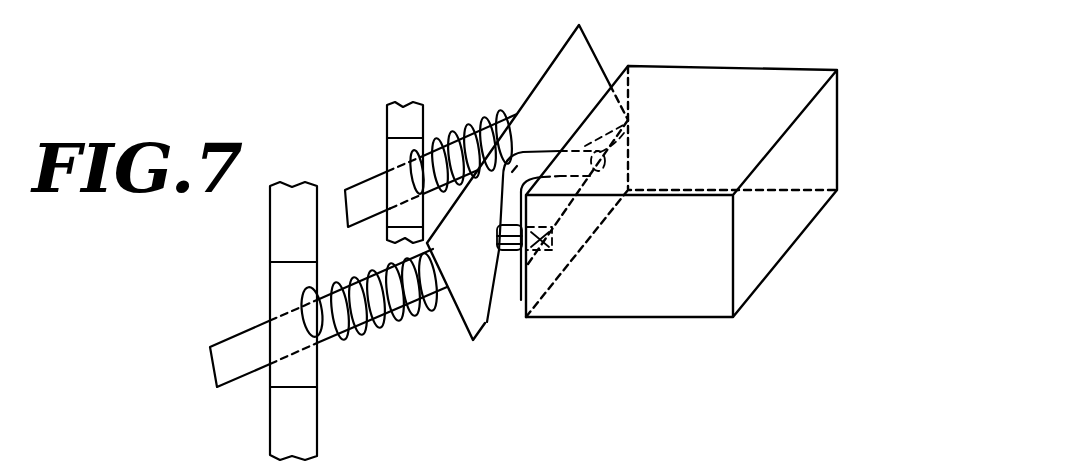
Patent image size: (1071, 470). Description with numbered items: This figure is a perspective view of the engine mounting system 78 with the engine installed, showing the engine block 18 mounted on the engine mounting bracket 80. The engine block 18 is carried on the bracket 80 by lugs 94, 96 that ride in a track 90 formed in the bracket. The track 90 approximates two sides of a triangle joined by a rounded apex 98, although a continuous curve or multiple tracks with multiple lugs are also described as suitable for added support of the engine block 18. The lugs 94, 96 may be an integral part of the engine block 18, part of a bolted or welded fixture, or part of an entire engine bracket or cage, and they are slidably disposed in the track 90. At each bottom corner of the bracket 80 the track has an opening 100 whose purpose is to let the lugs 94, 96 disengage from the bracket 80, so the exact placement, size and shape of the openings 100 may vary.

The engine block 18 is at (648, 307).
The engine mounting system 78 is at (333, 109).
The engine mounting bracket 80 is at (582, 61).
The track 90 is at (531, 163).
The lug 94 is at (560, 250).
The lug 96 is at (630, 122).
The rounded apex 98 is at (494, 199).
The opening 100 is at (502, 284).